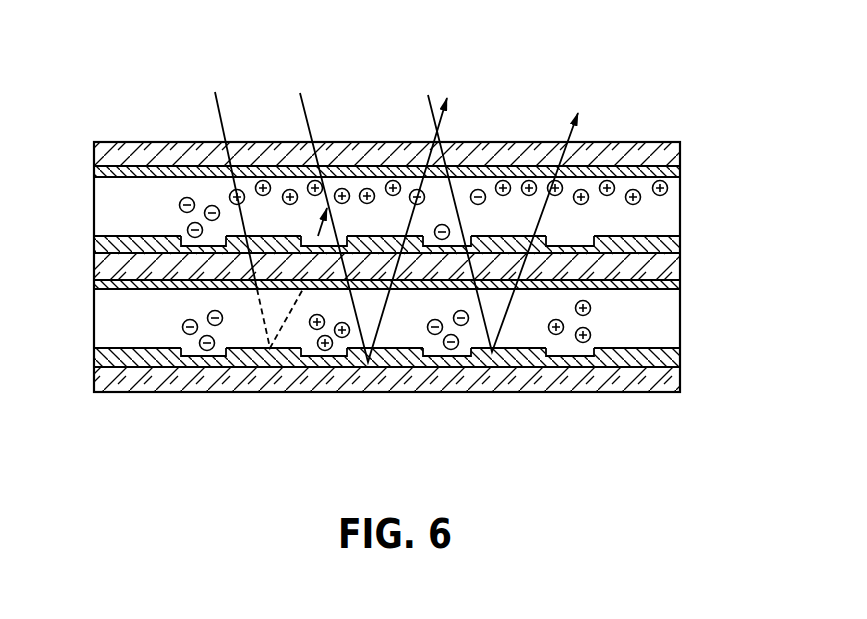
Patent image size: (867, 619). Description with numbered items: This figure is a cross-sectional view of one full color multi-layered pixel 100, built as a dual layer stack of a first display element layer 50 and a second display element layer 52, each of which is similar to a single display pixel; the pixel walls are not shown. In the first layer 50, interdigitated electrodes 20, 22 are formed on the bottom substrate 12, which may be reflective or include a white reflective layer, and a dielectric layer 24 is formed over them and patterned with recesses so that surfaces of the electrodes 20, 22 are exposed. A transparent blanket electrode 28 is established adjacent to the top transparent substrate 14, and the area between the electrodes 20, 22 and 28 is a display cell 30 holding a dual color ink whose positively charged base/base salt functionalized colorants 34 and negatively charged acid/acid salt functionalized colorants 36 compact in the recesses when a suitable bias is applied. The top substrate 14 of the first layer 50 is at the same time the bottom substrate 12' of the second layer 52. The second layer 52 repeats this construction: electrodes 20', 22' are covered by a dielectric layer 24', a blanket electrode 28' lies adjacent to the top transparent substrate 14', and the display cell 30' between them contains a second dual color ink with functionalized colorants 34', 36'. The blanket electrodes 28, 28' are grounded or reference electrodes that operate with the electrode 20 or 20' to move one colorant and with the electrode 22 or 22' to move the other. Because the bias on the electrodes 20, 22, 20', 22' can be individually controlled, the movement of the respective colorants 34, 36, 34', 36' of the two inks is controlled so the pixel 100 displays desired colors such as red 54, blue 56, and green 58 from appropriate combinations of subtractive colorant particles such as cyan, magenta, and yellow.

The multi-layered pixel 100 is at (528, 80).
The second display element layer 52 is at (92, 206).
The first display element layer 50 is at (92, 320).
The top transparent substrate of the second layer 14' is at (412, 132).
The blanket electrode of the second layer 28' is at (427, 176).
The display cell of the second layer 30' is at (439, 148).
The dielectric layer of the second layer 24' is at (427, 280).
The first interdigitated electrode of the second layer 20' is at (302, 277).
The second interdigitated electrode of the second layer 22' is at (469, 284).
The acid/acid salt functionalized colorants of the second layer 36' is at (307, 161).
The base/base salt functionalized colorants of the second layer 34' is at (449, 130).
The top transparent substrate of the first layer 14 is at (448, 271).
The bottom substrate of the second layer 12' is at (448, 271).
The blanket electrode 28 is at (427, 299).
The display cell 30 is at (426, 370).
The dielectric layer 24 is at (426, 409).
The first interdigitated electrode 20 is at (326, 410).
The second interdigitated electrode 22 is at (447, 410).
The acid/acid salt functionalized colorants 36 is at (281, 375).
The base/base salt functionalized colorants 34 is at (420, 369).
The bottom transparent substrate 12 is at (427, 389).
The red color 54 is at (219, 113).
The blue color 56 is at (306, 113).
The green color 58 is at (432, 108).